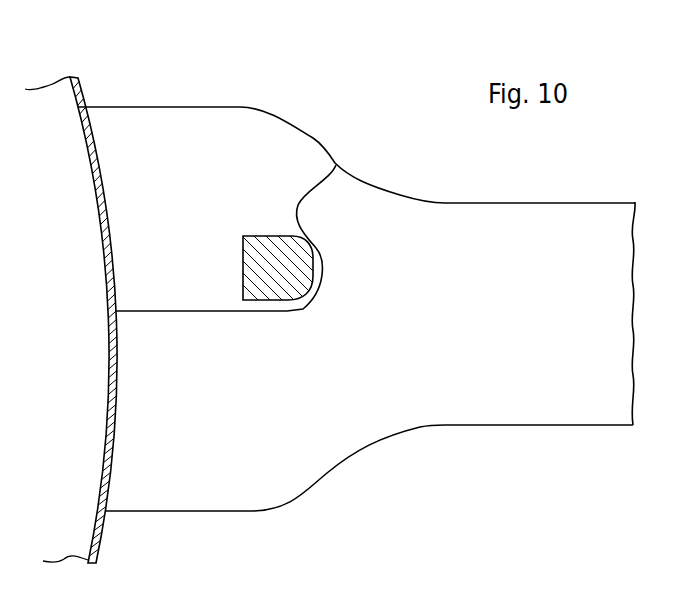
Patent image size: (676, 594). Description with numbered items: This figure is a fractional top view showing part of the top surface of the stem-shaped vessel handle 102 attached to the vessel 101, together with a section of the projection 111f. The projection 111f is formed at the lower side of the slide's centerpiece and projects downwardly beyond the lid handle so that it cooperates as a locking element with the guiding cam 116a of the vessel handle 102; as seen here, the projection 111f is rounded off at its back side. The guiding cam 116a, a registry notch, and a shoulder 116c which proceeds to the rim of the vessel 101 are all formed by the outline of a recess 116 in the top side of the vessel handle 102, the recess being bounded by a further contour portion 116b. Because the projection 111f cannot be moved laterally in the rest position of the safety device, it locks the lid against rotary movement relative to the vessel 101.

The vessel 101 is at (41, 112).
The vessel handle 102 is at (533, 380).
The recess 116 is at (356, 277).
The guiding cam 116a is at (320, 180).
The bead 116b is at (325, 283).
The shoulder 116c is at (212, 313).
The projection 111f is at (273, 255).